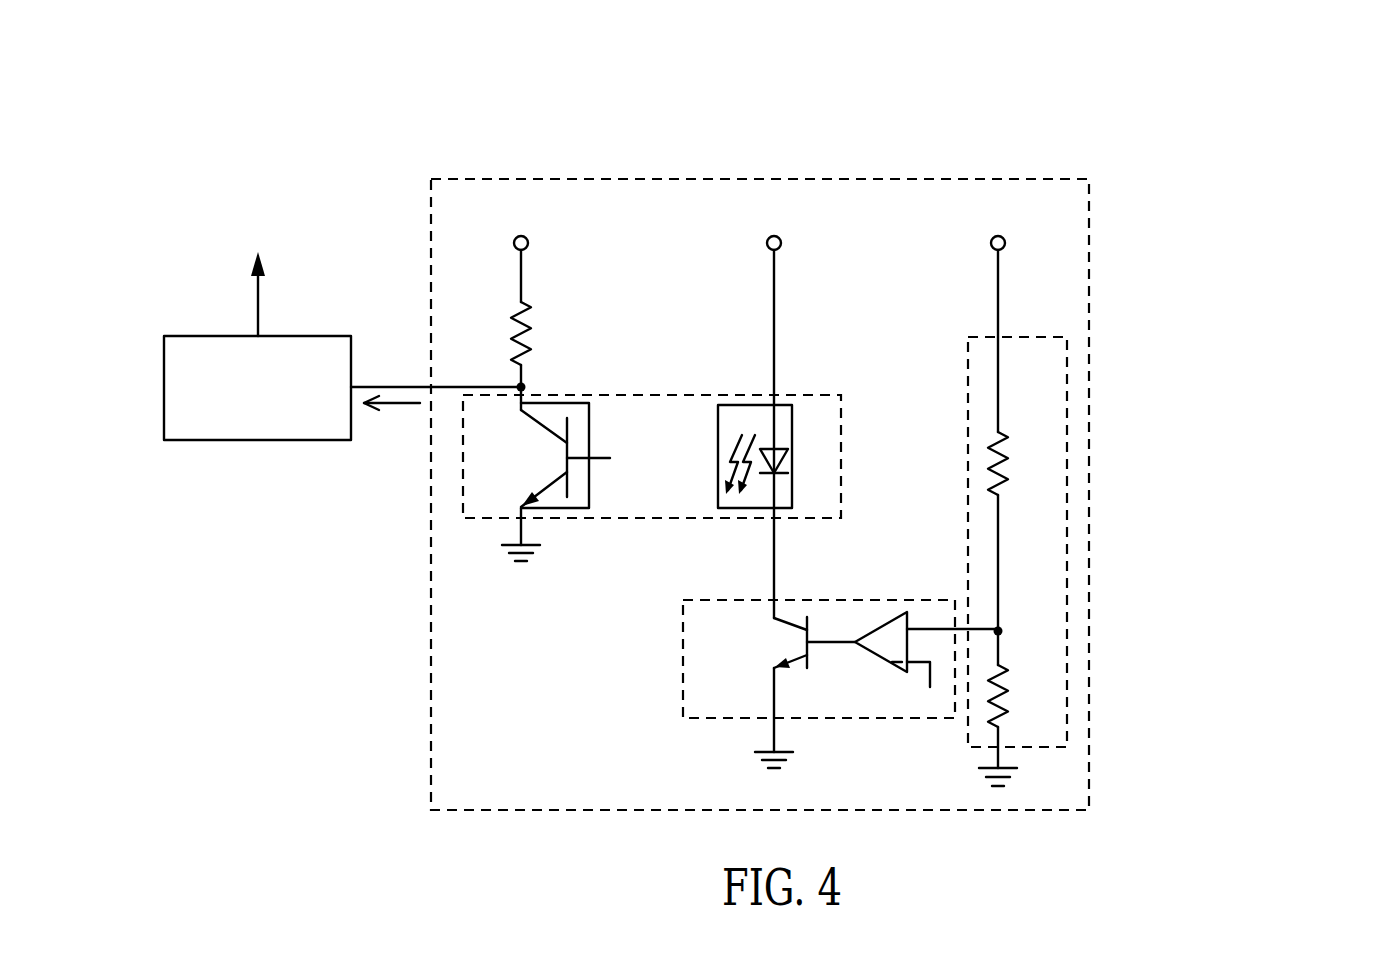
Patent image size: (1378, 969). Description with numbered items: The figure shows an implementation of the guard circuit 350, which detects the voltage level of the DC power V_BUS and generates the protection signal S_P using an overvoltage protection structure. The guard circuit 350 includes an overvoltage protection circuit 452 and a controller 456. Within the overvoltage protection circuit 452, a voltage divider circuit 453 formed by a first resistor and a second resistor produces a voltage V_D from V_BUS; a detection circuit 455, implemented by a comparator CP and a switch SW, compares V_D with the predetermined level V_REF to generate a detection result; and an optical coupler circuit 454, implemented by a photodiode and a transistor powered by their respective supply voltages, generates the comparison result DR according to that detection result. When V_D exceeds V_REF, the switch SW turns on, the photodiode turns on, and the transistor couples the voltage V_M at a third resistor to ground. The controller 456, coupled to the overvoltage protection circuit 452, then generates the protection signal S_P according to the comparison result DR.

The guard circuit 350 is at (1210, 111).
The overvoltage protection circuit 452 is at (997, 178).
The voltage divider circuit 453 is at (1010, 336).
The optical coupler circuit 454 is at (650, 394).
The detection circuit 455 is at (878, 599).
The controller 456 is at (187, 335).